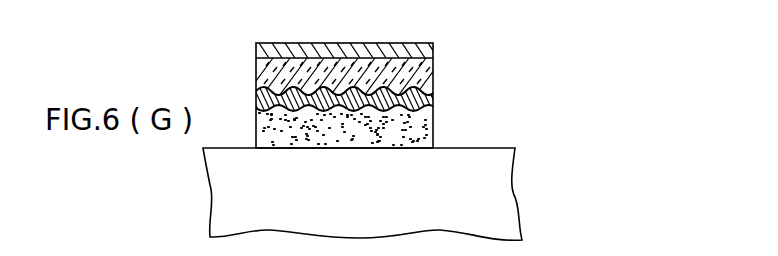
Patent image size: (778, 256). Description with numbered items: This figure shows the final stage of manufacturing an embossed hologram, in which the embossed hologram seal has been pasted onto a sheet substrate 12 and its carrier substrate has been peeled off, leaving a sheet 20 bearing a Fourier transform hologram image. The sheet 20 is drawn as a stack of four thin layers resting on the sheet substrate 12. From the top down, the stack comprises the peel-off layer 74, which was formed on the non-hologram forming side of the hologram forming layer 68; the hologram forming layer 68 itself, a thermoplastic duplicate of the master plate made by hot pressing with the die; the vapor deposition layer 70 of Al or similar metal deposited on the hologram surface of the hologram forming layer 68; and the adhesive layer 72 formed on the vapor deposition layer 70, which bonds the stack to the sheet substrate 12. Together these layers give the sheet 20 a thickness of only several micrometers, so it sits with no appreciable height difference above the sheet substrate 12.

The sheet substrate 12 is at (503, 202).
The sheet 20 is at (402, 81).
The hologram forming layer 68 is at (435, 75).
The vapor deposition layer 70 is at (435, 100).
The adhesive layer 72 is at (384, 130).
The peel-off layer 74 is at (435, 48).